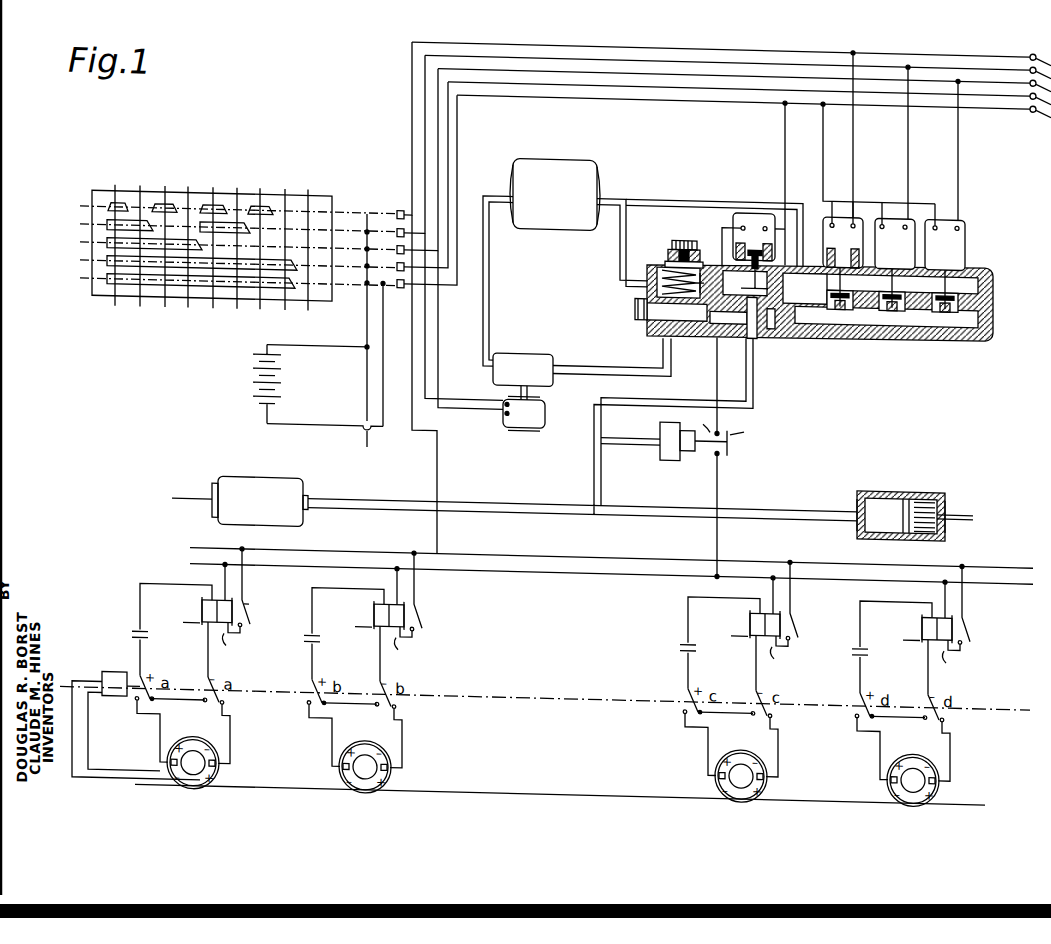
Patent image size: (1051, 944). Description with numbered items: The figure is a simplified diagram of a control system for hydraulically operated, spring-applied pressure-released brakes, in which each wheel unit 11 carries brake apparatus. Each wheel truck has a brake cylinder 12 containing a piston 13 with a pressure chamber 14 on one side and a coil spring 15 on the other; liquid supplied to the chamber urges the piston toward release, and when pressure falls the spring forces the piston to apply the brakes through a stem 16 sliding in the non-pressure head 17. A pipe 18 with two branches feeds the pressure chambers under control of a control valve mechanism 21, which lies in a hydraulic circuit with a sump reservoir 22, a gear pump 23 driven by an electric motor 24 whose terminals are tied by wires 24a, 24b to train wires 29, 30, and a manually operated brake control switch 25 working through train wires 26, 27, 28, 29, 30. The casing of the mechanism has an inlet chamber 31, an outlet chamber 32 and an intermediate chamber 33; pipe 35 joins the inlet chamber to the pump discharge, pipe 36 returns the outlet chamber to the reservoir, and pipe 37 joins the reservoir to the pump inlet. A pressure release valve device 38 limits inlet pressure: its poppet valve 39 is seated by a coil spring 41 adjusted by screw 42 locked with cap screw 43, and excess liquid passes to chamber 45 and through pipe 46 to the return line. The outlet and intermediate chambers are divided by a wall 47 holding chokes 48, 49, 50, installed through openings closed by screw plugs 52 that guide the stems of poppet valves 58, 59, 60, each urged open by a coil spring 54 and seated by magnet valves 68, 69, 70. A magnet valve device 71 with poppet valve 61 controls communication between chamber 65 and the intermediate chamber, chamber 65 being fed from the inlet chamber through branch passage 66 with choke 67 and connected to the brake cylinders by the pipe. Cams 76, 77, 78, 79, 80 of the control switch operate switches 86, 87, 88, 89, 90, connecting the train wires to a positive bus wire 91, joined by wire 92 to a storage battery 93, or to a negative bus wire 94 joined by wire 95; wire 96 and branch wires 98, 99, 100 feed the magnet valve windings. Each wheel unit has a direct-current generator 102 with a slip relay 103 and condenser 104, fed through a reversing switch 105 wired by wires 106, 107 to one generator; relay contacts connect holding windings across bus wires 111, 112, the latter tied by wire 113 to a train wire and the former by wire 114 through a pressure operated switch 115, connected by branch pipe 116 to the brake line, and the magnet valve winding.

The motor field 11 is at (184, 745).
The brake cylinder 12 is at (248, 471).
The piston 13 is at (900, 511).
The pressure chamber 14 is at (856, 512).
The coil spring 15 is at (940, 479).
The stem 16 is at (196, 494).
The non-pressure head 17 is at (945, 512).
The pipe 18 is at (662, 385).
The control valve mechanism 21 is at (814, 316).
The sump reservoir 22 is at (565, 146).
The pump 23 is at (540, 341).
The electric motor 24 is at (546, 402).
The wire 24a is at (440, 327).
The wire 24b is at (430, 388).
The brake control switch 25 is at (172, 294).
The train wire 26 is at (522, 38).
The train wire 27 is at (564, 50).
The train wire 28 is at (604, 62).
The train wire 29 is at (642, 75).
The train wire 30 is at (662, 87).
The inlet chamber 31 is at (660, 320).
The outlet chamber 32 is at (995, 260).
The intermediate chamber 33 is at (995, 297).
The pipe 35 is at (602, 351).
The pipe 36 is at (680, 182).
The pipe 37 is at (487, 274).
The pressure release valve device 38 is at (680, 222).
The valve 39 is at (634, 306).
The coil spring 41 is at (664, 248).
The screw 42 is at (667, 236).
The cap screw 43 is at (706, 250).
The chamber 45 is at (655, 282).
The pipe 46 is at (612, 236).
The wall 47 is at (815, 281).
The choke 48 is at (838, 310).
The choke 49 is at (891, 310).
The choke 50 is at (942, 310).
The screw plug 52 is at (762, 248).
The coil spring 54 is at (762, 236).
The poppet valve 58 is at (832, 274).
The poppet valve 59 is at (884, 274).
The poppet valve 60 is at (937, 274).
The poppet valve 61 is at (748, 276).
The chamber 65 is at (766, 322).
The branch passage 66 is at (748, 322).
The choke 67 is at (712, 322).
The magnet valve 68 is at (846, 195).
The magnet valve 69 is at (890, 195).
The magnet valve 70 is at (946, 195).
The magnet valve device 71 is at (754, 194).
The cam 76 is at (90, 204).
The cam 77 is at (90, 222).
The cam 78 is at (90, 240).
The cam 79 is at (90, 258).
The cam 80 is at (90, 276).
The switch 86 is at (393, 130).
The switch 87 is at (400, 145).
The switch 88 is at (406, 161).
The switch 89 is at (411, 176).
The switch 90 is at (416, 191).
The positive bus wire 91 is at (364, 303).
The wire 92 is at (316, 338).
The storage battery 93 is at (250, 375).
The negative bus wire 94 is at (388, 320).
The wire 95 is at (298, 425).
The wire 96 is at (821, 140).
The branch wire 98 is at (851, 117).
The branch wire 99 is at (906, 139).
The branch wire 100 is at (956, 115).
The direct-current generator 102 is at (200, 750).
The slip relay 103 is at (200, 606).
The condenser 104 is at (146, 636).
The reversing switch 105 is at (102, 672).
The wire 106 is at (72, 720).
The wire 107 is at (86, 740).
The bus wire 111 is at (505, 543).
The bus wire 112 is at (563, 559).
The wire 113 is at (435, 456).
The wire 114 is at (782, 114).
The pressure operated switch 115 is at (672, 446).
The branch pipe 116 is at (615, 432).